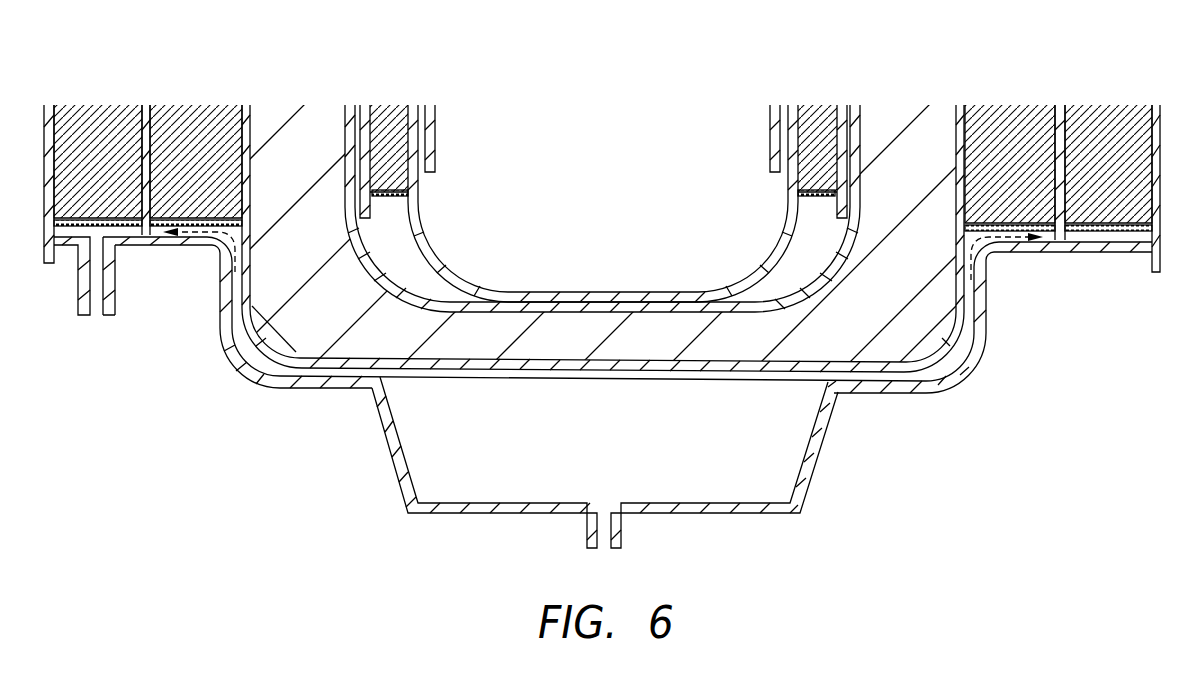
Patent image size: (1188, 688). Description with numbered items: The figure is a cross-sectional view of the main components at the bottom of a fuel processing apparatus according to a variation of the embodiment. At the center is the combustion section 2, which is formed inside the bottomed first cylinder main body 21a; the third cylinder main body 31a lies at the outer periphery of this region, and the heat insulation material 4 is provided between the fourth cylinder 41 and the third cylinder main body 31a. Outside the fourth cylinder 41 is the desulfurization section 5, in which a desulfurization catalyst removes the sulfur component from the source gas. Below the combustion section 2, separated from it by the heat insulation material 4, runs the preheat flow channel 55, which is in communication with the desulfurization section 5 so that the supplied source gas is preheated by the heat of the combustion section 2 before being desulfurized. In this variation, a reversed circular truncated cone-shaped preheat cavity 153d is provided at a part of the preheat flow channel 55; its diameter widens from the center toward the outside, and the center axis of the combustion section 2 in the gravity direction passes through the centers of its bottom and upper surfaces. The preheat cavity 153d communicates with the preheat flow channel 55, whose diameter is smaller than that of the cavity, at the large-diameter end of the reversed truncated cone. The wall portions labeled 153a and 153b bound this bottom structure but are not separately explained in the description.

The combustion section 2 is at (612, 142).
The heat insulation material 4 is at (952, 297).
The desulfurization section 5 is at (153, 228).
The first cylinder main body 21a is at (537, 300).
The third cylinder main body 31a is at (675, 308).
The fourth cylinder 41 is at (960, 345).
The preheat flow channel 55 is at (251, 368).
The flange portion of shell 153a is at (1097, 253).
The side/bottom wall of shell 153b is at (895, 393).
The preheat cavity 153d is at (723, 493).